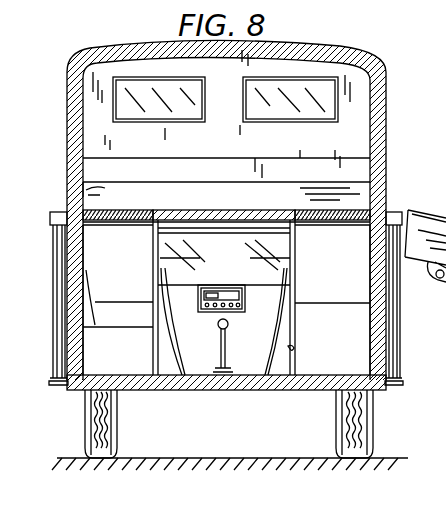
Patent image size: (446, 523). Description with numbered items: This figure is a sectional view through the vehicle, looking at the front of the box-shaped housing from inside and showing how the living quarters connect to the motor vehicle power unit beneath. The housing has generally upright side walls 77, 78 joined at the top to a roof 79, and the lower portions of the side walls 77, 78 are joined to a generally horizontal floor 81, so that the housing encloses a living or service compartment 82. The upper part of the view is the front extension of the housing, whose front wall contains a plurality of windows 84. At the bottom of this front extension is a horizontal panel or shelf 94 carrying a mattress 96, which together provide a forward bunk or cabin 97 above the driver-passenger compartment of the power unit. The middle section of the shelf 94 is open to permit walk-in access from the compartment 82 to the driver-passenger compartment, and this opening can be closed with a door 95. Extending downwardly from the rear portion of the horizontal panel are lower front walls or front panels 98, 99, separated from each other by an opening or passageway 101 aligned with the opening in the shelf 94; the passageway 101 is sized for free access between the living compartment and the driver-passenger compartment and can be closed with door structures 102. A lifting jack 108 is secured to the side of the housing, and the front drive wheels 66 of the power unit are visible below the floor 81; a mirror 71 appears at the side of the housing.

The front drive wheels 66 is at (336, 433).
The rear view mirror 71 is at (418, 224).
The side wall 77 is at (67, 143).
The side wall 78 is at (387, 116).
The roof 79 is at (142, 44).
The floor 81 is at (182, 388).
The living or service compartment 82 is at (104, 350).
The windows 84 is at (263, 100).
The horizontal panel or shelf 94 is at (112, 212).
The door 95 is at (236, 218).
The mattress 96 is at (228, 208).
The forward bunk or cabin 97 is at (232, 156).
The lower front wall or front panel 98 is at (125, 273).
The lower front wall or front panel 99 is at (341, 273).
The opening or passageway 101 is at (294, 348).
The door structures 102 is at (224, 297).
The lifting jack 108 is at (56, 290).